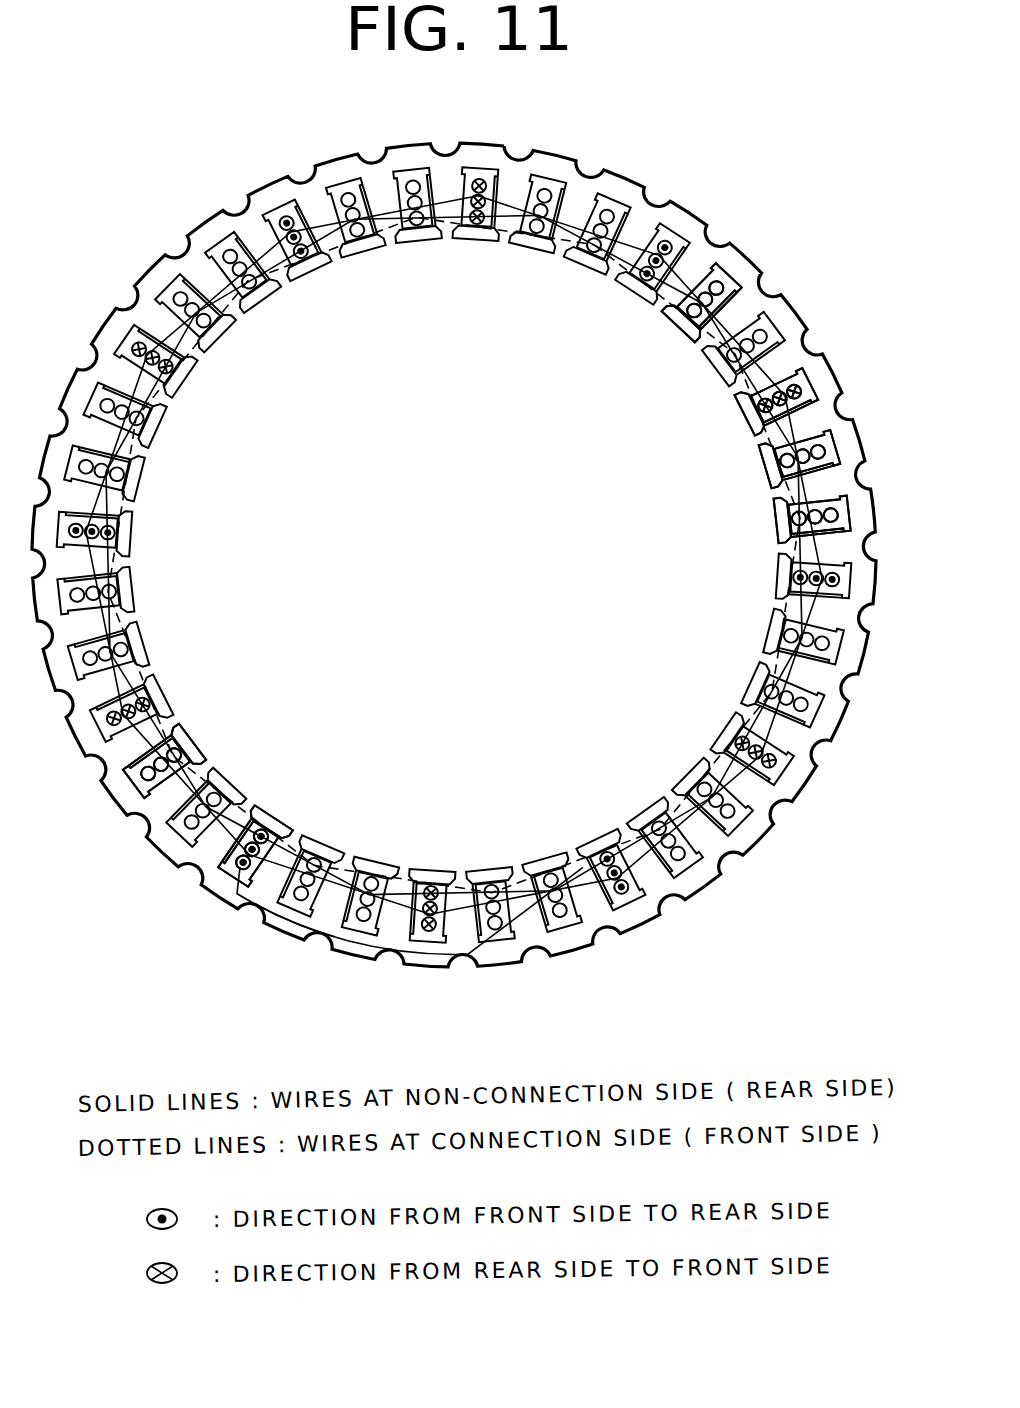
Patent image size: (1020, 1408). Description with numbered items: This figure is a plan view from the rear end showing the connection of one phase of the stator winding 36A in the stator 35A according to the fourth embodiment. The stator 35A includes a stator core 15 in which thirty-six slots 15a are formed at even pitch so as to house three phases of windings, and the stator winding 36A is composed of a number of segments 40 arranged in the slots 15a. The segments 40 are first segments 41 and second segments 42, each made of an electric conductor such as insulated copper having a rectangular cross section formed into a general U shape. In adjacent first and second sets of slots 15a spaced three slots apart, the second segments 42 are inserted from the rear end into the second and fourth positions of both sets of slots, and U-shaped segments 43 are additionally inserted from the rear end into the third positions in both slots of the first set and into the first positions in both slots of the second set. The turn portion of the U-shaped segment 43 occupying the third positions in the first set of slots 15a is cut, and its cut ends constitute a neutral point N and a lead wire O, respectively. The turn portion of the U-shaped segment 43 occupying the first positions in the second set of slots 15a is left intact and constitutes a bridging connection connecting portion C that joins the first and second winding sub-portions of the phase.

The stator 35A is at (138, 217).
The stator core 15 is at (745, 247).
The slots 15a is at (730, 290).
The segments 40 is at (648, 407).
The first segments 41 is at (760, 433).
The second segments 42 is at (730, 380).
The stator winding 36A is at (762, 508).
The neutral point N is at (163, 735).
The lead wire O is at (267, 867).
The bridging connection connecting portion C is at (295, 923).
The U-shaped segments 43 is at (353, 947).